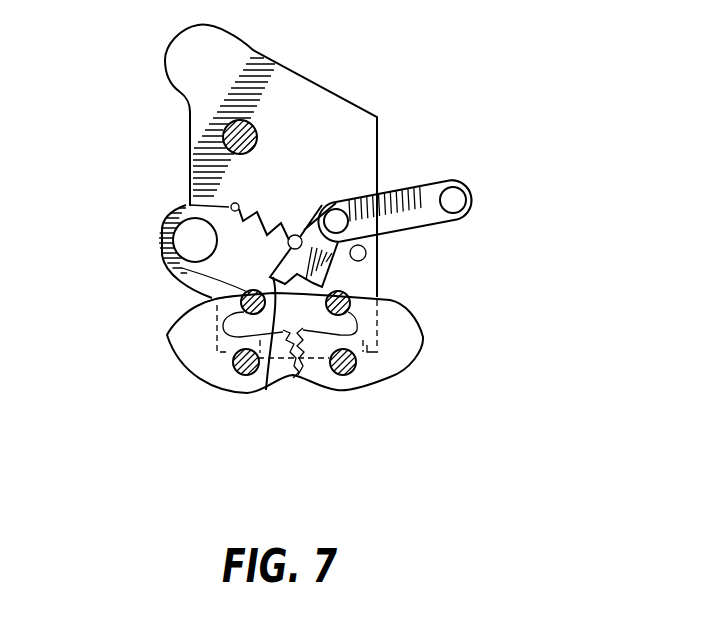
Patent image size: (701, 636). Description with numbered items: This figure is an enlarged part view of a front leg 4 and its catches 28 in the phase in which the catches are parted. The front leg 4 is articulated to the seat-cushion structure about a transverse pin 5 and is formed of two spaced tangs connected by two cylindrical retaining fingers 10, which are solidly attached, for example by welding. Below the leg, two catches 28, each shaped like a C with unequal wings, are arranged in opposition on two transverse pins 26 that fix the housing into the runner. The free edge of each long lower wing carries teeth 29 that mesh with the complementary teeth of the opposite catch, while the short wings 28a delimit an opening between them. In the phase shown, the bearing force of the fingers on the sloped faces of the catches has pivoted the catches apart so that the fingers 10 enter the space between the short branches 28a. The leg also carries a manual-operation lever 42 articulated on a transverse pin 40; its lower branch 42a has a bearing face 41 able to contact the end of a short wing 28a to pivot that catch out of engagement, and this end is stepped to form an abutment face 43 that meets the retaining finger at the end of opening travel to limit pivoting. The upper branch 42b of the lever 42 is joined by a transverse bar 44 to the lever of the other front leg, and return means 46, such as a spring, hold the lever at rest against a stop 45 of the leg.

The front leg 4 is at (297, 112).
The transverse pin 5 is at (223, 128).
The retaining fingers 10 is at (251, 290).
The transverse pins 26 is at (239, 374).
The catches 28 is at (183, 335).
The short wings 28a is at (217, 300).
The teeth 29 is at (293, 385).
The transverse pin 40 is at (337, 208).
The bearing face 41 is at (338, 280).
The lever 42 is at (384, 194).
The lower branch 42a is at (297, 235).
The upper branch 42b is at (444, 176).
The abutment face 43 is at (266, 390).
The transverse bar 44 is at (470, 196).
The stop 45 is at (366, 252).
The return means 46 is at (197, 200).